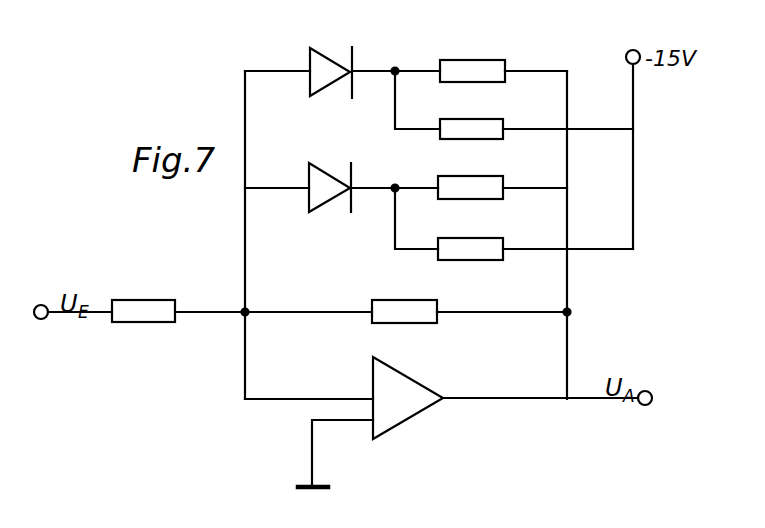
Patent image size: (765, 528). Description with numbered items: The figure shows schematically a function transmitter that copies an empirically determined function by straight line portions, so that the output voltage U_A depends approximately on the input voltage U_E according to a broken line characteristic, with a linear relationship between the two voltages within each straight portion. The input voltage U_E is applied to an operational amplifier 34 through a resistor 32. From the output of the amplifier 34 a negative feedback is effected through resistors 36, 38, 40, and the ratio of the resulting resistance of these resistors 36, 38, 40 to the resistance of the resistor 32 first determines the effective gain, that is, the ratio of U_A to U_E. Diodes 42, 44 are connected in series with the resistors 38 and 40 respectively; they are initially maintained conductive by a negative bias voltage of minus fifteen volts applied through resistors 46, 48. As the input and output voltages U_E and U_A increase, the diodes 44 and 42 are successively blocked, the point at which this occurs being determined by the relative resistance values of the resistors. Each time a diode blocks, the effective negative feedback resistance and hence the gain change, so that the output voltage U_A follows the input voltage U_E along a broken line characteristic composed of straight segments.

The resistor 32 is at (143, 300).
The operational amplifier 34 is at (400, 383).
The resistor 36 is at (428, 310).
The resistor 38 is at (502, 186).
The resistor 40 is at (475, 63).
The diode 42 is at (310, 178).
The diode 44 is at (310, 62).
The resistor 46 is at (497, 125).
The resistor 48 is at (500, 248).